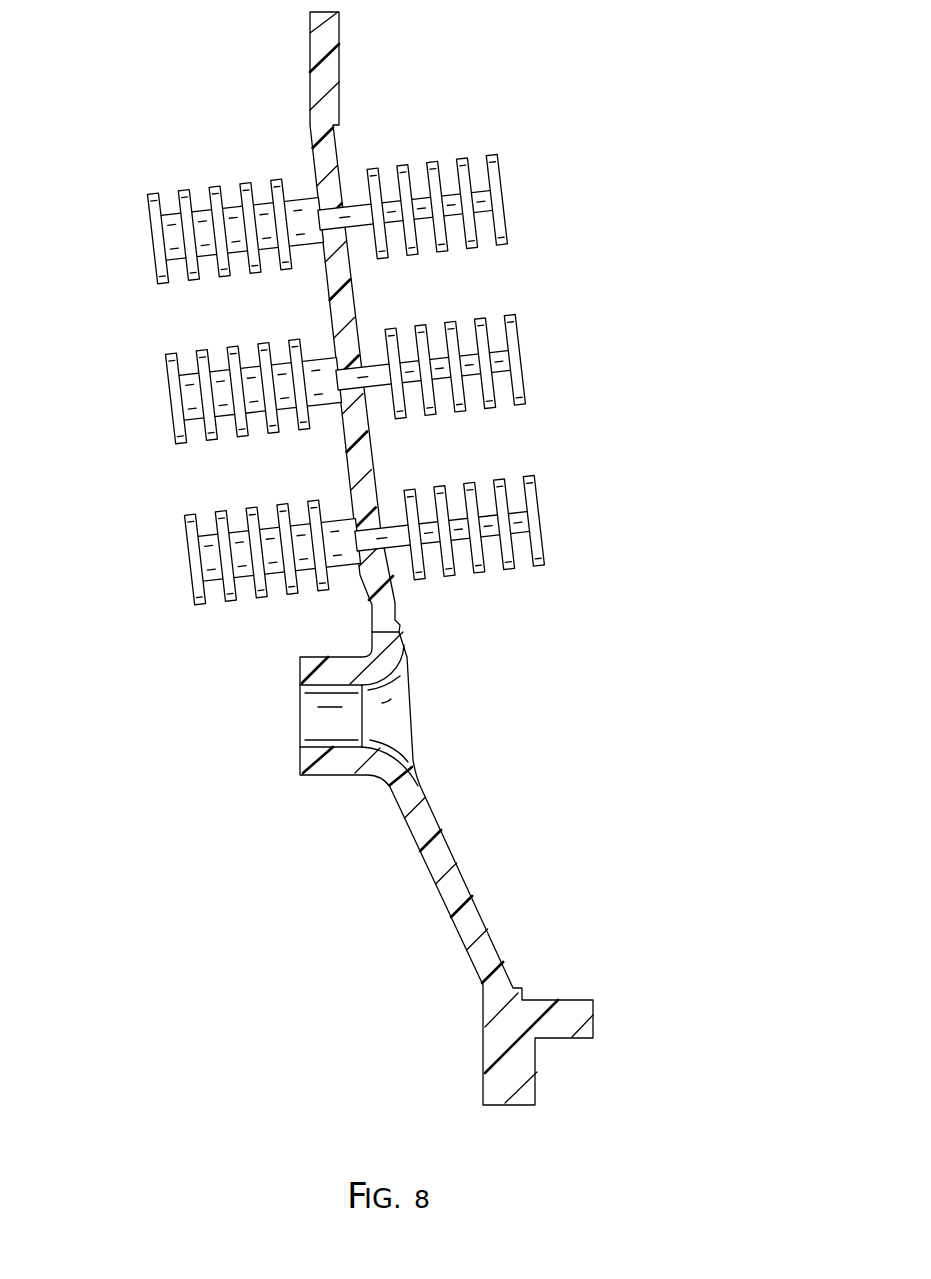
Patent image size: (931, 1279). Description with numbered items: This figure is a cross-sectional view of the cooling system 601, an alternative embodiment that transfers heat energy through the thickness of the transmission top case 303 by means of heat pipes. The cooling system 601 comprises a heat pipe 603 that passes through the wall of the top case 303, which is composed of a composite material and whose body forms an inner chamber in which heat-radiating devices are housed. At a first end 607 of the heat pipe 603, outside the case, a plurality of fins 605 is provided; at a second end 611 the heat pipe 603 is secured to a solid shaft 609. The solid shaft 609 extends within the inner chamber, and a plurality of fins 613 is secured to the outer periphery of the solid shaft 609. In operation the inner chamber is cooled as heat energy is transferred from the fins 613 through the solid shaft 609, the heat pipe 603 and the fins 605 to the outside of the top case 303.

The cooling system 601 is at (391, 322).
The heat pipe 603 is at (353, 200).
The fins 605 is at (507, 177).
The first end 607 is at (490, 229).
The solid shaft 609 is at (202, 207).
The second end 611 is at (161, 264).
The fins 613 is at (147, 227).
The transmission top case 303 is at (483, 913).